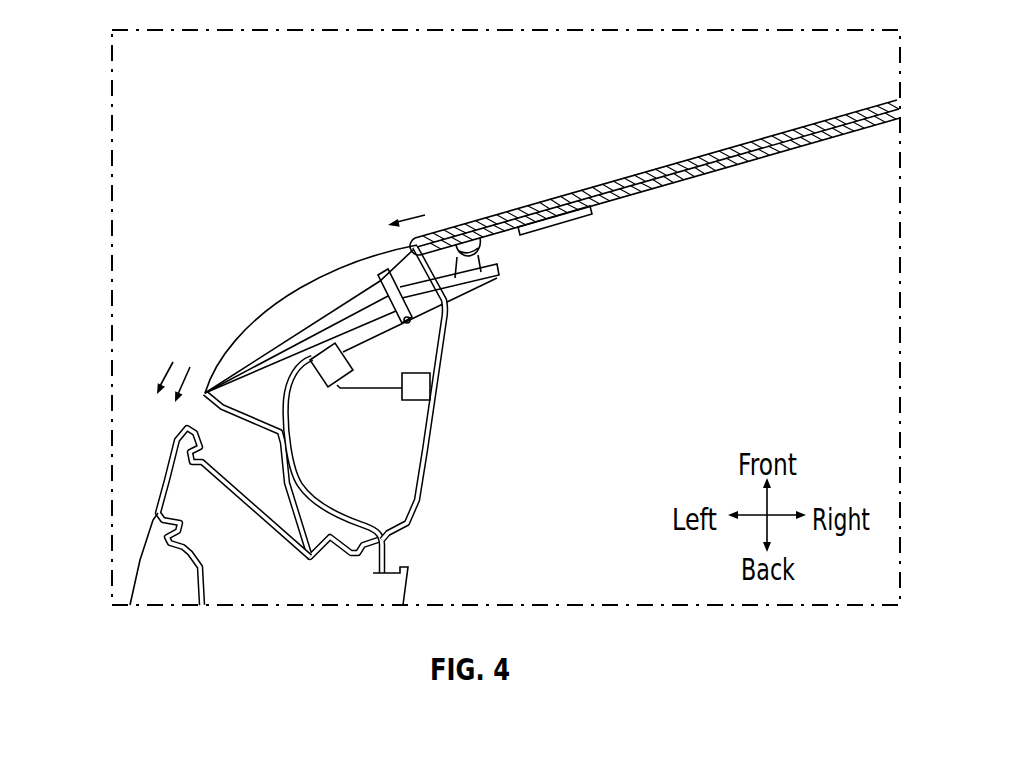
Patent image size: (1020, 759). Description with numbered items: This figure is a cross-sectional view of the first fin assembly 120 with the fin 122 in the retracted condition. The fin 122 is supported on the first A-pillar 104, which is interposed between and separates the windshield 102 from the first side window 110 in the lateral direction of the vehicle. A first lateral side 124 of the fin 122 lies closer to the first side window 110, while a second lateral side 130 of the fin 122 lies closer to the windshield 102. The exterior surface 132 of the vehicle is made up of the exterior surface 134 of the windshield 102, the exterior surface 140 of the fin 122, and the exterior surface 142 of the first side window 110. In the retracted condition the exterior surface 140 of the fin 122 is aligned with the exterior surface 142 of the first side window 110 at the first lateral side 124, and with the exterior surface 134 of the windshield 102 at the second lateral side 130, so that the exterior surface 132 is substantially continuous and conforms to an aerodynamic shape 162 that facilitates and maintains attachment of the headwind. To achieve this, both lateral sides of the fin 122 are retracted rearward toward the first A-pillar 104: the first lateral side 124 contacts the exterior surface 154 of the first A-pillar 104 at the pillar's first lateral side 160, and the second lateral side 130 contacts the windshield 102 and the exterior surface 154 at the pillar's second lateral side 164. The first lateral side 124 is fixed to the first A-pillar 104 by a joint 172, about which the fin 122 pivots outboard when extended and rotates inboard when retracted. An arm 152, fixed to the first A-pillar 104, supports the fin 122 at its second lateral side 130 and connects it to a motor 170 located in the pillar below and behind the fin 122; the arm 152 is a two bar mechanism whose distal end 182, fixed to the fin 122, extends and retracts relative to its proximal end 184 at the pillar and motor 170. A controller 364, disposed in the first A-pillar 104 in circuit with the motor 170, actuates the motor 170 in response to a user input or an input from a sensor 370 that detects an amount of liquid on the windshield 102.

The windshield 102 is at (543, 202).
The first A-pillar 104 is at (427, 443).
The first side window 110 is at (143, 545).
The first fin assembly 120 is at (199, 221).
The fin 122 is at (290, 307).
The first lateral side 124 is at (226, 366).
The second lateral side 130 is at (367, 270).
The exterior surface 132 is at (767, 138).
The exterior surface 134 is at (618, 170).
The exterior surface 140 is at (330, 280).
The exterior surface 142 is at (133, 580).
The arm 152 is at (400, 330).
The exterior surface 154 is at (243, 367).
The first lateral side 160 is at (224, 409).
The aerodynamic shape 162 is at (186, 420).
The second lateral side 164 is at (432, 240).
The motor 170 is at (328, 373).
The joint 172 is at (205, 393).
The distal end 182 is at (415, 299).
The proximal end 184 is at (350, 353).
The controller 364 is at (418, 392).
The sensor 370 is at (557, 220).